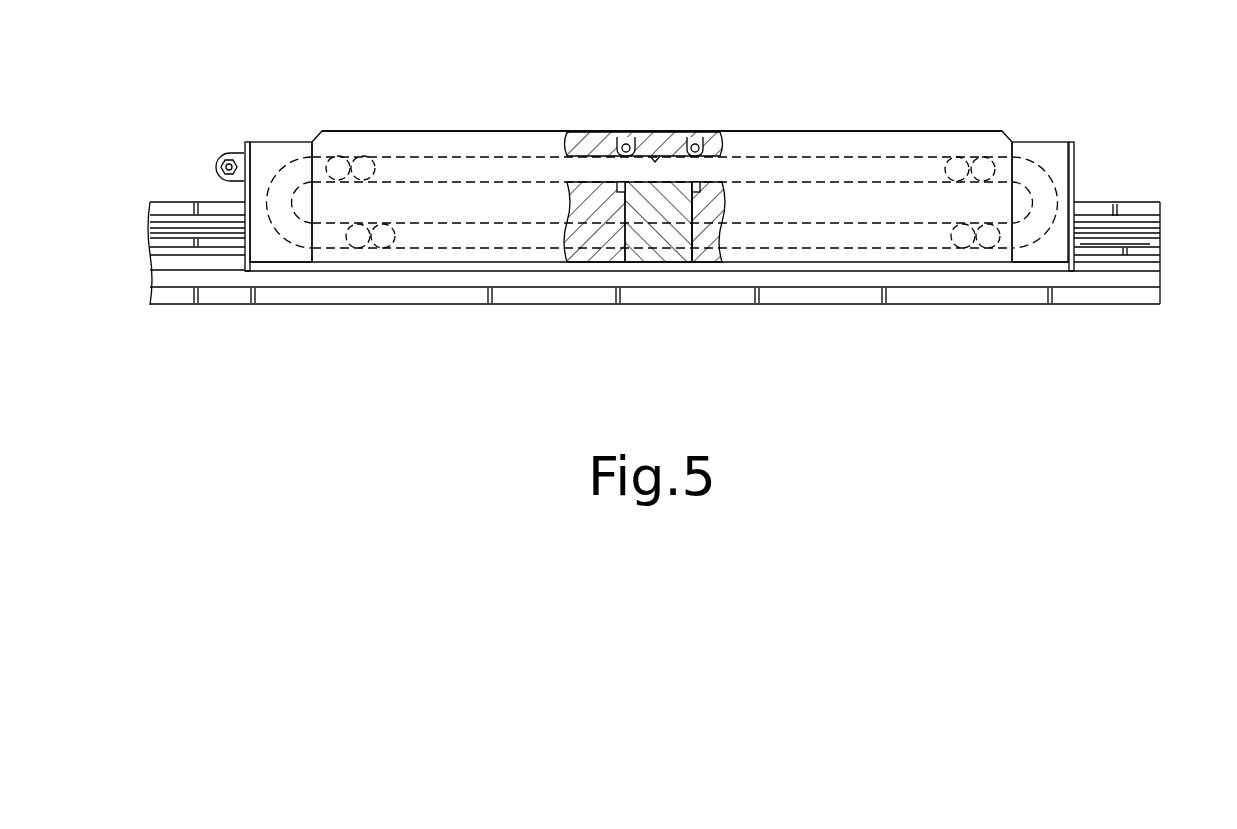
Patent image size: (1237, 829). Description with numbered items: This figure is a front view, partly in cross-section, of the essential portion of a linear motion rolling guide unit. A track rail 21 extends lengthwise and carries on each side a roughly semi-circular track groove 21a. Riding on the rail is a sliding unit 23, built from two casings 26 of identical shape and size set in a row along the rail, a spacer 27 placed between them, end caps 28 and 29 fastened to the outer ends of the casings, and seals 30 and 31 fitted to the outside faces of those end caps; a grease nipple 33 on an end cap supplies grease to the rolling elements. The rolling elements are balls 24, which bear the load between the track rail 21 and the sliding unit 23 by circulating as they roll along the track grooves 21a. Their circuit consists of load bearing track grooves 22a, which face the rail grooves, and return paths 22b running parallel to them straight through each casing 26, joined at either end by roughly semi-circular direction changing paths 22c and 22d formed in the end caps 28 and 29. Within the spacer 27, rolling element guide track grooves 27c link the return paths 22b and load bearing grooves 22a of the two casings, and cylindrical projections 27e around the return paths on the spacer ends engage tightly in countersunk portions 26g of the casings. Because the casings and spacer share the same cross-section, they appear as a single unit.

The track rail 21 is at (1172, 198).
The track grooves 21a is at (1133, 250).
The load bearing track grooves 22a is at (433, 250).
The return paths 22b is at (412, 167).
The direction changing path 22c is at (255, 193).
The direction changing path 22d is at (1128, 225).
The sliding unit 23 is at (957, 124).
The balls 24 is at (370, 160).
The casing 26 is at (470, 131).
The countersunk portions 26g is at (628, 145).
The spacer 27 is at (643, 262).
The rolling element guide track grooves 27c is at (678, 262).
The cylindrical projections 27e is at (612, 150).
The end cap 28 is at (285, 143).
The end cap 29 is at (1040, 143).
The seal 30 is at (247, 143).
The seal 31 is at (1072, 143).
The grease nipple 33 is at (218, 158).